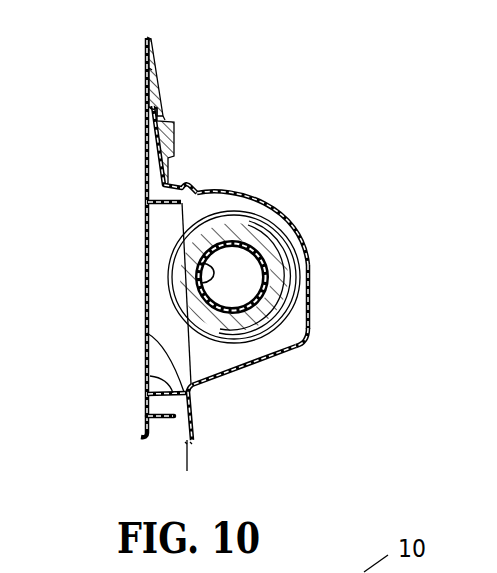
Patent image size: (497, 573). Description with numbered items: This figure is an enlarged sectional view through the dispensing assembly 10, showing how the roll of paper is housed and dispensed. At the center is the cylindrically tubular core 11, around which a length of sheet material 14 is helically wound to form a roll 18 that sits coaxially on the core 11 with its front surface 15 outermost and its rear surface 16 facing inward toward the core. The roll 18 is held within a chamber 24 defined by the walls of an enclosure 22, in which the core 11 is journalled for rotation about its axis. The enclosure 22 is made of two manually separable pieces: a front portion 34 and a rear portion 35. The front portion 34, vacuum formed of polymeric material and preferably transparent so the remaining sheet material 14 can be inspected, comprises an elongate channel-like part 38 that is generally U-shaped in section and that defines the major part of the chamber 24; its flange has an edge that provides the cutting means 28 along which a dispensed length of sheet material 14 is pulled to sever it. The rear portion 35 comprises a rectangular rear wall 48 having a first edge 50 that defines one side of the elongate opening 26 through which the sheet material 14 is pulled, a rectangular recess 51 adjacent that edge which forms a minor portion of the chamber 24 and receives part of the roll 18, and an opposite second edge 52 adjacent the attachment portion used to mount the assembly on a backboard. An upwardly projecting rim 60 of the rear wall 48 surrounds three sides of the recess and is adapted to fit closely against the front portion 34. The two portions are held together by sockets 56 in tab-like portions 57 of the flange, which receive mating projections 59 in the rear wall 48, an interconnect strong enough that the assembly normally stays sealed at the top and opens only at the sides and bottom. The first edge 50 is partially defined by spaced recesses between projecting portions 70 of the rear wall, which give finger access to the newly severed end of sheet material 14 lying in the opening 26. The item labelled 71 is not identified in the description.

The dispensing assembly 10 is at (322, 129).
The cylindrically tubular core 11 is at (207, 273).
The length of sheet material 14 is at (192, 472).
The front surface 15 is at (190, 461).
The rear surface 16 is at (186, 450).
The roll 18 is at (242, 240).
The enclosure 22 is at (310, 313).
The chamber 24 is at (248, 395).
The elongate opening 26 is at (147, 340).
The cutting means 28 is at (196, 441).
The front portion 34 is at (254, 200).
The rear portion 35 is at (55, 94).
The channel-like part 38 is at (310, 263).
The rear wall 48 is at (146, 53).
The first edge 50 is at (145, 438).
The rectangular recess 51 is at (158, 230).
The second edge 52 is at (148, 38).
The sockets 56 is at (175, 138).
The tab-like portions 57 is at (164, 118).
The projections 59 is at (146, 107).
The rim 60 is at (198, 196).
The projecting portions 70 is at (150, 376).
The groove 71 is at (146, 70).